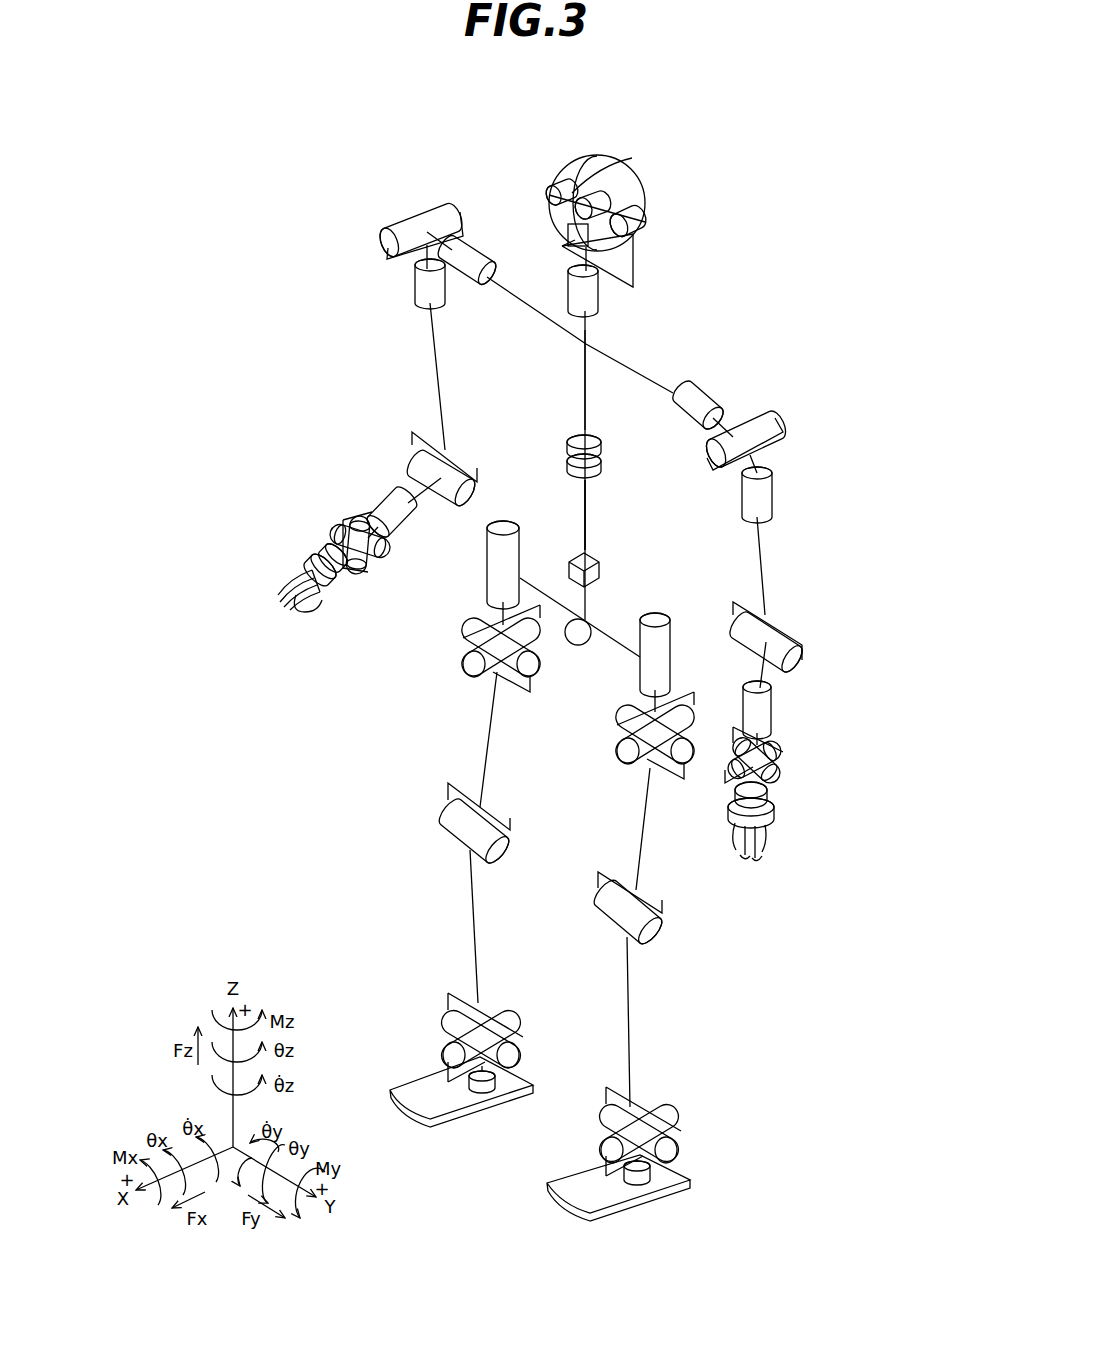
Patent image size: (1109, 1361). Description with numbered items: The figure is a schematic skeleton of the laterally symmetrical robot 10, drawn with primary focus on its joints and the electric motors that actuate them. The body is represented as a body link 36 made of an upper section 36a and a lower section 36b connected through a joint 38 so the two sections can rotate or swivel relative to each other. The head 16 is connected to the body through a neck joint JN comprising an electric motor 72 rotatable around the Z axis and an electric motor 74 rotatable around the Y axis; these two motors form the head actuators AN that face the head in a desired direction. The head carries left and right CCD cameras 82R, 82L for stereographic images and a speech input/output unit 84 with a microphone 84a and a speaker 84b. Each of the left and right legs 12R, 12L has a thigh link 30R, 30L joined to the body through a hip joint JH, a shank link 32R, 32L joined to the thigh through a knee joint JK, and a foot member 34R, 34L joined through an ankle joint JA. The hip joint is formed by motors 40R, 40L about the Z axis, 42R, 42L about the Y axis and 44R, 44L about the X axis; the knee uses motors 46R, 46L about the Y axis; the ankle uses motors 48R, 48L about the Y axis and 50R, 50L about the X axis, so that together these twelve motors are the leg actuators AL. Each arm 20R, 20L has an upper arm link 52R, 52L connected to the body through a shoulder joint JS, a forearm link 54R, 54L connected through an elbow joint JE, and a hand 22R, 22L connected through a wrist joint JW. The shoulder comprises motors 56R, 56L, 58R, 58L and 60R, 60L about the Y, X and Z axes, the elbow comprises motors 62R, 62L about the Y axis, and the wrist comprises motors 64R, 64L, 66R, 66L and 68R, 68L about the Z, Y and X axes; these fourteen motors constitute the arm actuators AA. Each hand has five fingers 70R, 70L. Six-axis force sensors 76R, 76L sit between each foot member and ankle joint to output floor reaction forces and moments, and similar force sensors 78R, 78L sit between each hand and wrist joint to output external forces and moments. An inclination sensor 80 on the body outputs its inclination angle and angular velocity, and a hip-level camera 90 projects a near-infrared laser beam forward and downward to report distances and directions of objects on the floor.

The robot 10 is at (720, 325).
The right leg 12R is at (410, 847).
The left leg 12L is at (693, 962).
The head 16 is at (575, 160).
The right arm 20R is at (410, 395).
The left arm 20L is at (790, 605).
The right hand 22R is at (332, 597).
The left hand 22L is at (770, 827).
The right thigh link 30R is at (490, 772).
The left thigh link 30L is at (640, 845).
The right shank link 32R is at (477, 943).
The left shank link 32L is at (630, 1013).
The right foot member 34R is at (442, 1122).
The left foot member 34L is at (600, 1208).
The body link 36 is at (590, 497).
The upper section 36a is at (588, 408).
The lower section 36b is at (590, 540).
The joint 38 is at (605, 450).
The right hip electric motor 40R is at (508, 553).
The left hip electric motor 40L is at (667, 640).
The right hip electric motor 42R is at (470, 620).
The left hip electric motor 42L is at (622, 717).
The right hip electric motor 44R is at (470, 668).
The left hip electric motor 44L is at (625, 765).
The right knee electric motor 46R is at (503, 850).
The left knee electric motor 46L is at (655, 928).
The right ankle electric motor 48R is at (508, 1057).
The left ankle electric motor 48L is at (678, 1137).
The right ankle electric motor 50R is at (503, 1013).
The left ankle electric motor 50L is at (662, 1113).
The right upper arm link 52R is at (443, 397).
The left upper arm link 52L is at (767, 550).
The right forearm link 54R is at (410, 492).
The left forearm link 54L is at (767, 670).
The right shoulder electric motor 56R is at (478, 255).
The left shoulder electric motor 56L is at (700, 400).
The right shoulder electric motor 58R is at (387, 223).
The left shoulder electric motor 58L is at (767, 420).
The right shoulder electric motor 60R is at (415, 290).
The left shoulder electric motor 60L is at (771, 497).
The right elbow electric motor 62R is at (478, 482).
The left elbow electric motor 62L is at (800, 648).
The right wrist electric motor 64R is at (413, 518).
The left wrist electric motor 64L is at (772, 712).
The right wrist electric motor 66R is at (340, 540).
The left wrist electric motor 66L is at (782, 775).
The right wrist electric motor 68R is at (358, 520).
The left wrist electric motor 68L is at (783, 745).
The right hand fingers 70R is at (275, 610).
The left hand fingers 70L is at (768, 858).
The neck electric motor 72 is at (598, 303).
The neck electric motor 74 is at (640, 215).
The right leg force sensor 76R is at (492, 1085).
The left leg force sensor 76L is at (650, 1180).
The right arm force sensor 78R is at (318, 556).
The left arm force sensor 78L is at (772, 800).
The inclination sensor 80 is at (599, 570).
The right CCD camera 82R is at (553, 192).
The left CCD camera 82L is at (600, 190).
The speech input/output unit 84 is at (612, 243).
The microphone 84a is at (625, 265).
The speaker 84b is at (564, 252).
The hip-level camera 90 is at (574, 646).
The neck joint JN is at (657, 216).
The shoulder joint JS is at (380, 243).
The elbow joint JE is at (376, 416).
The wrist joint JW is at (365, 580).
The hip joint JH is at (460, 650).
The knee joint JK is at (416, 796).
The ankle joint JA is at (428, 1006).
The head actuators AN is at (703, 265).
The leg actuators AL is at (697, 695).
The arm actuators AA is at (858, 735).